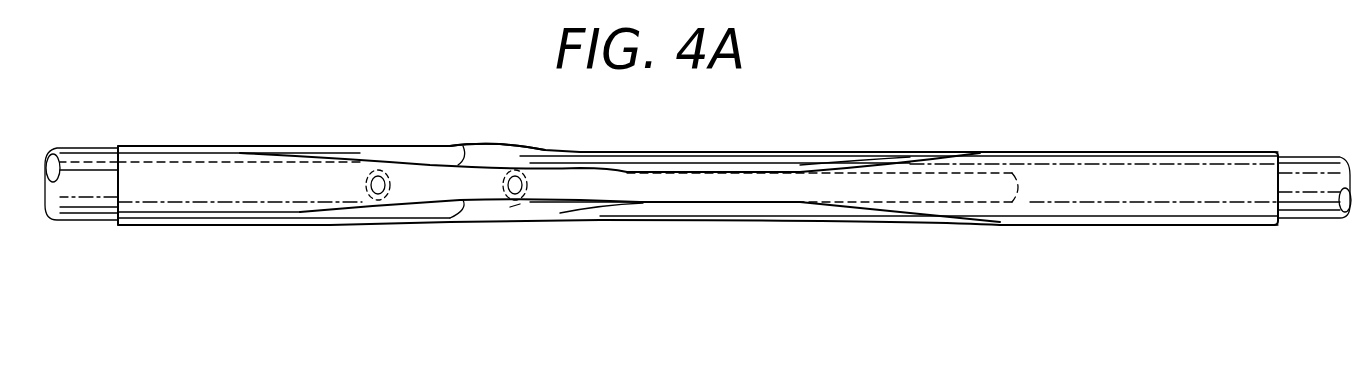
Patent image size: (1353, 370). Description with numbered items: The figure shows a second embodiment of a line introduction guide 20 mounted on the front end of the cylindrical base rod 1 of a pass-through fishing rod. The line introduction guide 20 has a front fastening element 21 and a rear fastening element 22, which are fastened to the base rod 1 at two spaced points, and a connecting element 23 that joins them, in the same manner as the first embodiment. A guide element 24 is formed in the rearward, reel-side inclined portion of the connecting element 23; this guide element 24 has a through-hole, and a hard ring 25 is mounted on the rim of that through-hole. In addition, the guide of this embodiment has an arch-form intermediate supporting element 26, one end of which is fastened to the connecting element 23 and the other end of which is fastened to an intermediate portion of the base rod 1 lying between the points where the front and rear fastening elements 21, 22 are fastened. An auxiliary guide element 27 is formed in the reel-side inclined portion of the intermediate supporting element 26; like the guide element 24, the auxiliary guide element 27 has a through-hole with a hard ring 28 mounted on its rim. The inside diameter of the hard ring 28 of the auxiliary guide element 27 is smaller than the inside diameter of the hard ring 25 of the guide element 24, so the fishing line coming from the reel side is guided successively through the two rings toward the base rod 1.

The base rod 1 is at (680, 213).
The line introduction guide 20 is at (813, 172).
The front fastening element 21 is at (1182, 208).
The rear fastening element 22 is at (232, 214).
The connecting element 23 is at (593, 188).
The guide element 24 is at (402, 175).
The hard ring 25 is at (377, 196).
The intermediate supporting element 26 is at (550, 163).
The auxiliary guide element 27 is at (515, 170).
The hard ring 28 is at (522, 200).